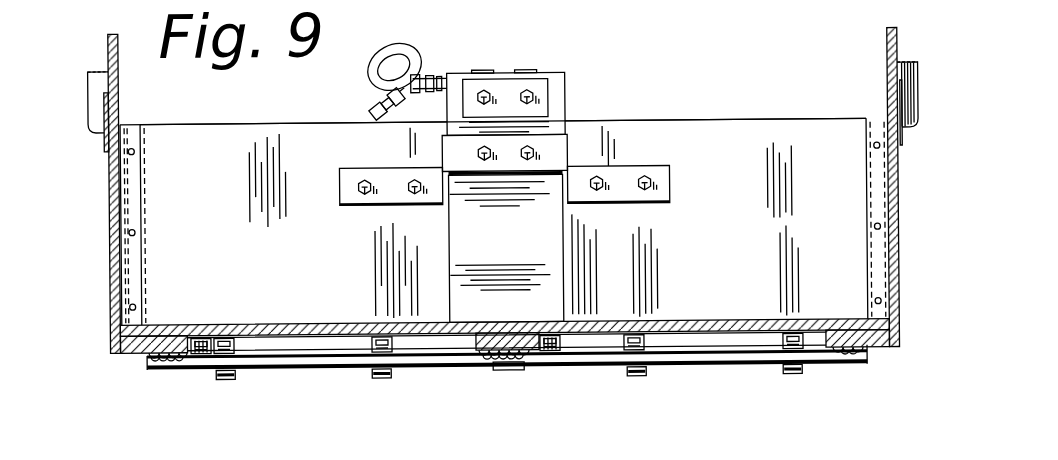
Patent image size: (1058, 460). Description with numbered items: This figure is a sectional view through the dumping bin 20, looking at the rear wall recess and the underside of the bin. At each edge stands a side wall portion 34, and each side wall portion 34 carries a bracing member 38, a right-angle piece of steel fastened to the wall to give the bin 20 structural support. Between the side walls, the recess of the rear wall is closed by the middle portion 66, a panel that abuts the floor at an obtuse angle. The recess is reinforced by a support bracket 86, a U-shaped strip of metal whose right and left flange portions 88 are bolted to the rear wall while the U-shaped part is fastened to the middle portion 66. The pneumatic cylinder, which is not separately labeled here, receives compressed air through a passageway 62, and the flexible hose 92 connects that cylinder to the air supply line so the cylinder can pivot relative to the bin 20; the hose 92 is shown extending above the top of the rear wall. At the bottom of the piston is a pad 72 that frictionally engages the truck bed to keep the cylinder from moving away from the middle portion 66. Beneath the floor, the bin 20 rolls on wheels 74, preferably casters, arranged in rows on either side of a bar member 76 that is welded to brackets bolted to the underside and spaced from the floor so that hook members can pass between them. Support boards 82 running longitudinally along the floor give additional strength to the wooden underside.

The dumping bin 20 is at (722, 104).
The side wall portion 34 is at (110, 237).
The bracing member 38 is at (97, 100).
The passageway 62 is at (450, 54).
The middle portion 66 is at (241, 135).
The pad 72 is at (512, 384).
The wheels 74 is at (229, 378).
The bar member 76 is at (192, 363).
The support boards 82 is at (146, 344).
The support bracket 86 is at (569, 137).
The flange portions 88 is at (668, 172).
The flexible hose 92 is at (410, 44).